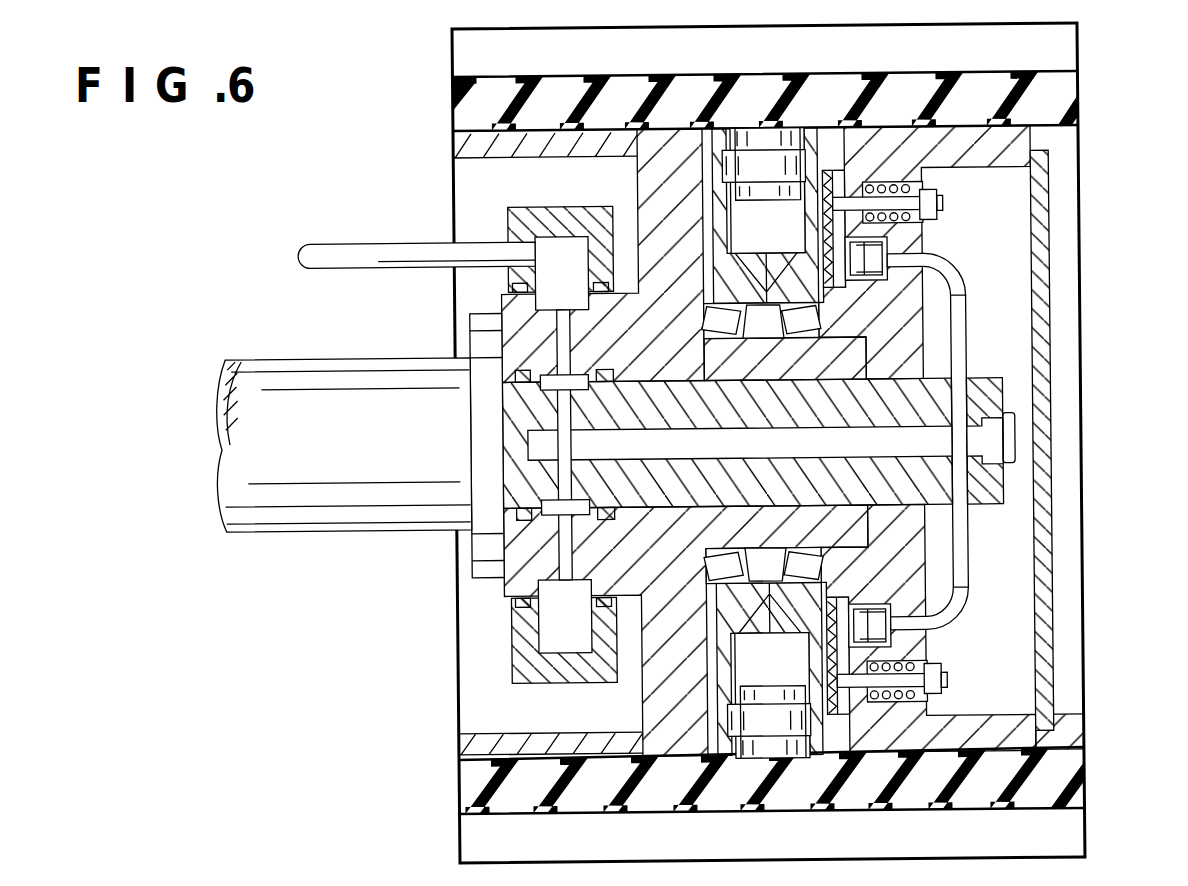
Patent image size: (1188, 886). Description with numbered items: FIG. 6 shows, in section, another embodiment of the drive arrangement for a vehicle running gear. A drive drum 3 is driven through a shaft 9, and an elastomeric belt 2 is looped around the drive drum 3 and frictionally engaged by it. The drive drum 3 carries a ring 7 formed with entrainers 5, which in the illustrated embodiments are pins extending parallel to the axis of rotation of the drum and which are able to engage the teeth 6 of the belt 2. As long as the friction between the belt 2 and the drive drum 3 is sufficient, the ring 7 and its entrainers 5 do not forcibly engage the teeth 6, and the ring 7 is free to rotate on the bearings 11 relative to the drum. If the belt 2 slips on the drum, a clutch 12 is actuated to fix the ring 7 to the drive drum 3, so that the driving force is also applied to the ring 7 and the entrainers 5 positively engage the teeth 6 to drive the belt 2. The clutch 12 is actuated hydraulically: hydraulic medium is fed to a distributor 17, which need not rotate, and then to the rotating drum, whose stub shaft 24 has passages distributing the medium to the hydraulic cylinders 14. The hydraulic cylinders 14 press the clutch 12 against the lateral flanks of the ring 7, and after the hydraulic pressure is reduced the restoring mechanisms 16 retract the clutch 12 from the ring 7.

The belt 2 is at (490, 87).
The drive drum 3 is at (455, 140).
The entrainers 5 is at (825, 169).
The teeth 6 is at (760, 127).
The ring 7 is at (725, 200).
The shaft 9 is at (284, 510).
The bearings 11 is at (828, 323).
The clutch 12 is at (894, 243).
The hydraulic cylinders 14 is at (882, 249).
The restoring mechanisms 16 is at (920, 192).
The distributor 17 is at (512, 210).
The stub shaft 24 is at (990, 485).